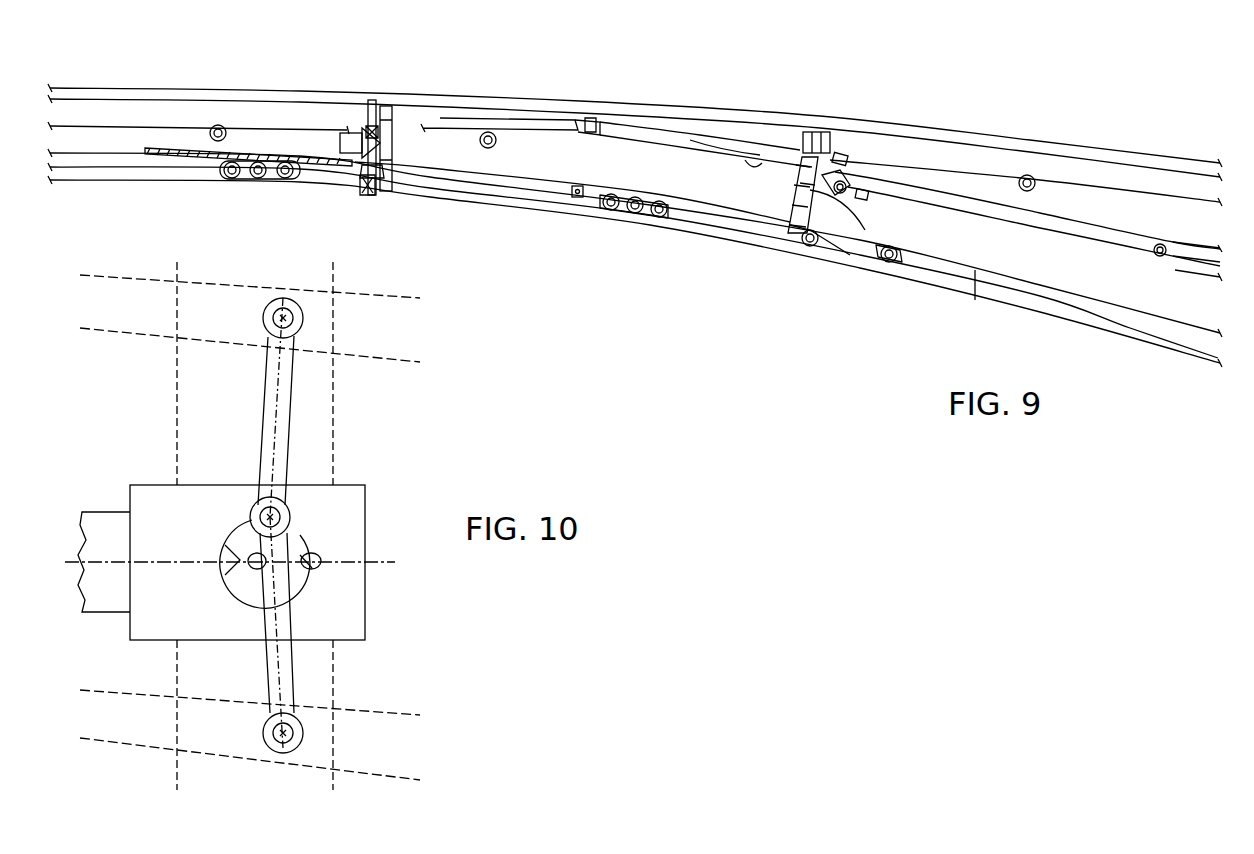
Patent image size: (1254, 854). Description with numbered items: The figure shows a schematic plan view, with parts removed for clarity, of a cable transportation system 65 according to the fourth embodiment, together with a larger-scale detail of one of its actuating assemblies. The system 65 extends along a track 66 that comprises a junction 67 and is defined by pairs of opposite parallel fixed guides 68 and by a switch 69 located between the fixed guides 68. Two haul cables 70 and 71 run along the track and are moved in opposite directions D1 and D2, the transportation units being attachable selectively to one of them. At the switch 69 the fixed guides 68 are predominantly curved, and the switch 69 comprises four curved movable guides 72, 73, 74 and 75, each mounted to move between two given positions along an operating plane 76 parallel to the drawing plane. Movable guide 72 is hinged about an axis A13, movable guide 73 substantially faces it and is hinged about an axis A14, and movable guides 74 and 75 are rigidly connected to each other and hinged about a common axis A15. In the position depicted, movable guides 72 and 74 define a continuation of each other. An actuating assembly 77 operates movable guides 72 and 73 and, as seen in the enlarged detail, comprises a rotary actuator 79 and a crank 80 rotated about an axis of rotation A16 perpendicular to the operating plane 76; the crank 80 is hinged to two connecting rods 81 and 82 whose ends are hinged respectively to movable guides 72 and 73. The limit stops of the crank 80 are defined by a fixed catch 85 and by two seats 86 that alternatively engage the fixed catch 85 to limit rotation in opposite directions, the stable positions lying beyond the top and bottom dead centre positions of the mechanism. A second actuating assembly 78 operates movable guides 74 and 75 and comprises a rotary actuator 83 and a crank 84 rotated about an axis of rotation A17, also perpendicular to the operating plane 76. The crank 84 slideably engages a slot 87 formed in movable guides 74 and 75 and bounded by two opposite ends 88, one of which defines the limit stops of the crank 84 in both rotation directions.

In FIG. 9, the cable transportation system 65 is at (882, 95).
In FIG. 9, the track 66 is at (903, 112).
In FIG. 9, the junction 67 is at (926, 320).
In FIG. 9, the fixed guides 68 is at (280, 88).
In FIG. 9, the switch 69 is at (758, 100).
In FIG. 9, the haul cable 70 is at (1050, 180).
In FIG. 9, the haul cable 71 is at (975, 300).
In FIG. 9, the movable guide 72 is at (512, 120).
In FIG. 10, the movable guide 72 is at (117, 305).
In FIG. 9, the movable guide 73 is at (425, 187).
In FIG. 10, the movable guide 73 is at (105, 708).
In FIG. 9, the movable guide 74 is at (905, 190).
In FIG. 9, the movable guide 75 is at (985, 205).
In FIG. 9, the operating plane 76 is at (755, 130).
In FIG. 9, the actuating assembly 77 is at (345, 188).
In FIG. 10, the actuating assembly 77 is at (378, 470).
In FIG. 9, the actuating assembly 78 is at (832, 232).
In FIG. 9, the rotary actuator 79 is at (388, 110).
In FIG. 10, the rotary actuator 79 is at (345, 535).
In FIG. 9, the crank 80 is at (362, 165).
In FIG. 10, the crank 80 is at (240, 530).
In FIG. 9, the connecting rod 81 is at (372, 110).
In FIG. 10, the connecting rod 81 is at (292, 410).
In FIG. 9, the connecting rod 82 is at (378, 180).
In FIG. 10, the connecting rod 82 is at (292, 680).
In FIG. 9, the rotary actuator 83 is at (838, 198).
In FIG. 9, the crank 84 is at (803, 182).
In FIG. 10, the fixed catch 85 is at (320, 570).
In FIG. 10, the seats 86 is at (220, 568).
In FIG. 9, the slot 87 is at (860, 205).
In FIG. 9, the ends 88 is at (842, 152).
In FIG. 9, the axis A13 is at (590, 118).
In FIG. 9, the axis A14 is at (565, 200).
In FIG. 9, the axis A15 is at (1160, 258).
In FIG. 9, the axis of rotation A16 is at (365, 125).
In FIG. 10, the axis of rotation A16 is at (245, 595).
In FIG. 9, the axis of rotation A17 is at (800, 188).
In FIG. 9, the direction D1 is at (1065, 192).
In FIG. 9, the direction D2 is at (1060, 282).